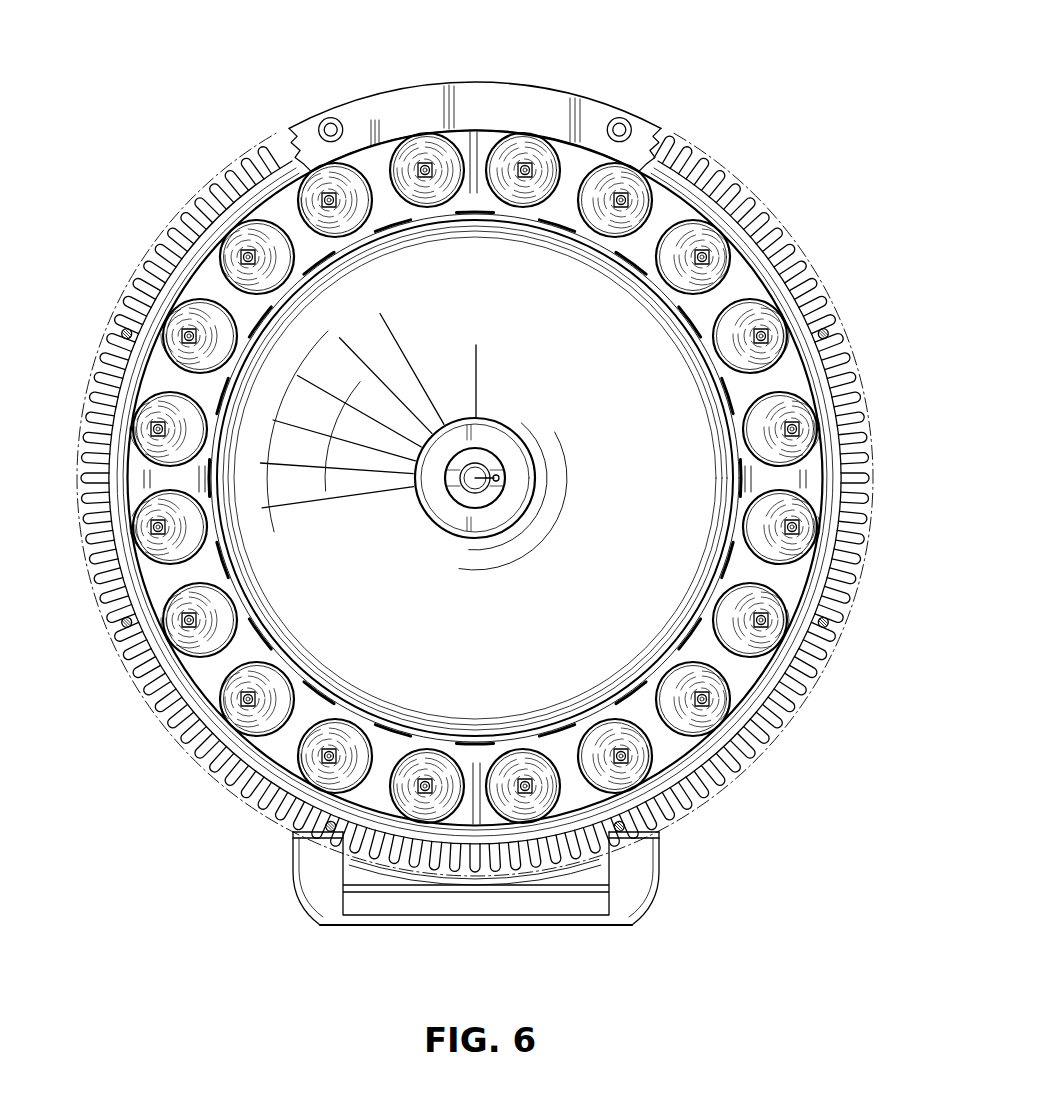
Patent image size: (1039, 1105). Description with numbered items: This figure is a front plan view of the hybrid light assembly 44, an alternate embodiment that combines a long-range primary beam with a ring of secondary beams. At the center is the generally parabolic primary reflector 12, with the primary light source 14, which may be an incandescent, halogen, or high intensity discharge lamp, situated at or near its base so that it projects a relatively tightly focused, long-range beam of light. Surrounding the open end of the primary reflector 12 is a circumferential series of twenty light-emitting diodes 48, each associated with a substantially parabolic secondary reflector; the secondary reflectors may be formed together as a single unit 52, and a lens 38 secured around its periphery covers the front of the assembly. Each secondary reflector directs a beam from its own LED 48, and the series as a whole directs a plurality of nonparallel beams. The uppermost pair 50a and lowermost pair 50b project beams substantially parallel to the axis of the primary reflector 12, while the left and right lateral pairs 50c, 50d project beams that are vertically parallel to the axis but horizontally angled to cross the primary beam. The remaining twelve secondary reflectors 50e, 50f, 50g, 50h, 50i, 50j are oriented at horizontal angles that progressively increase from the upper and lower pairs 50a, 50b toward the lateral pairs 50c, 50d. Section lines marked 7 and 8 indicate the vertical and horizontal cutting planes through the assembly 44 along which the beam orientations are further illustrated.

The section line 7- 7 is at (490, 31).
The section line 8- 8 is at (35, 465).
The primary reflector 12 is at (460, 308).
The primary light source 14 is at (490, 445).
The lens 38 is at (535, 87).
The hybrid light assembly 44 is at (770, 106).
The light-emitting diodes 48 is at (522, 168).
The uppermost pair of secondary reflectors 50a is at (410, 143).
The lowermost pair of secondary reflectors 50b is at (415, 800).
The left lateral pair of secondary reflectors 50c is at (150, 410).
The right lateral pair of secondary reflectors 50d is at (800, 410).
The secondary reflector 50e is at (322, 168).
The secondary reflector 50f is at (236, 236).
The secondary reflector 50g is at (180, 318).
The secondary reflector 50h is at (180, 640).
The secondary reflector 50i is at (238, 712).
The secondary reflector 50j is at (318, 772).
The single unit 52 is at (262, 192).